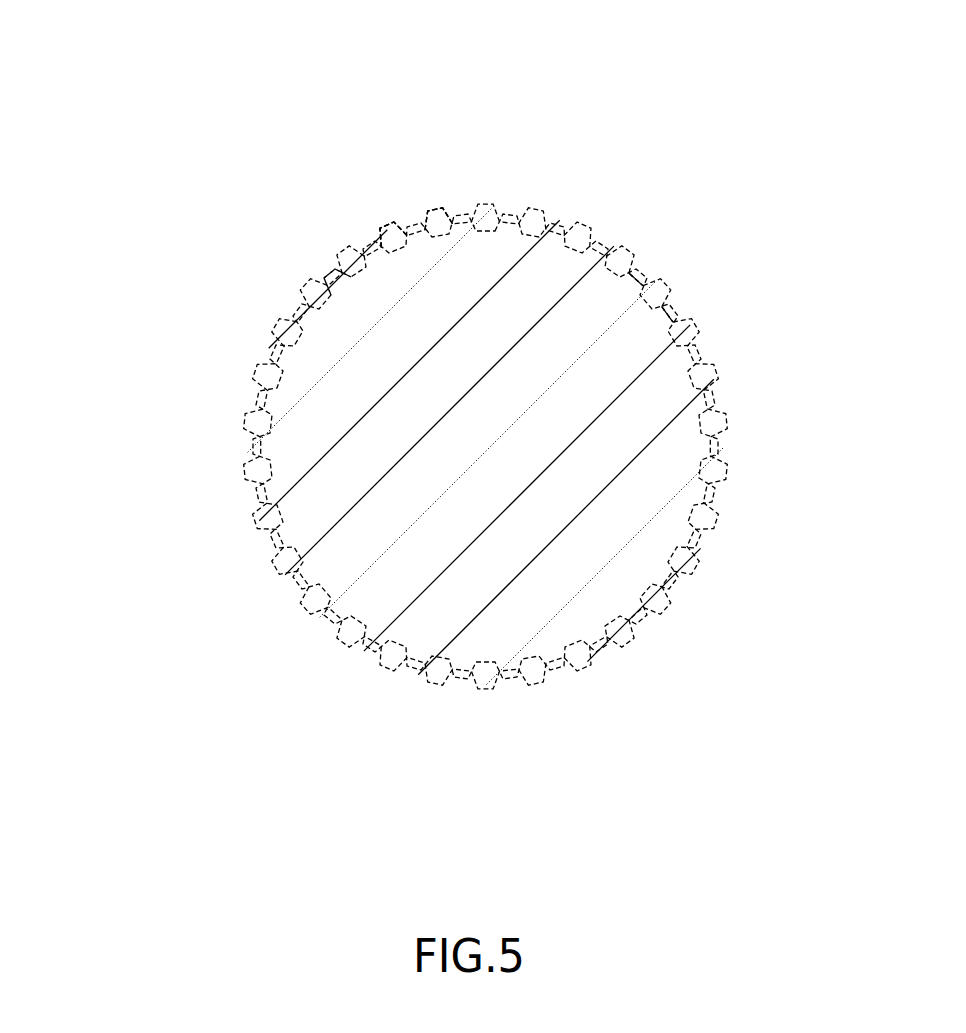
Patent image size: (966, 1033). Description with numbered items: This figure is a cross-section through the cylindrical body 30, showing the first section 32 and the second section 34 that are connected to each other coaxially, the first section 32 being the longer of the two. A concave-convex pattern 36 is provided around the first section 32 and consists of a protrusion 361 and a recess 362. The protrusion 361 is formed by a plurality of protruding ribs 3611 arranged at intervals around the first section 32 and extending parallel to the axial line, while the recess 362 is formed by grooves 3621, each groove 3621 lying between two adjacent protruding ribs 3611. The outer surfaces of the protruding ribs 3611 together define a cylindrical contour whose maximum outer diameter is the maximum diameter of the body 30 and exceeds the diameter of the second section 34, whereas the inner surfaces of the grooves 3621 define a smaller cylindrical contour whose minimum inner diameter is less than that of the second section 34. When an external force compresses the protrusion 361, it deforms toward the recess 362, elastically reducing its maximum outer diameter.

The body 30 is at (519, 376).
The first section 32 is at (600, 395).
The second section 34 is at (332, 274).
The concave-convex pattern 36 is at (519, 372).
The protrusion 361 is at (196, 58).
The protruding ribs 3611 is at (428, 208).
The recess 362 is at (858, 185).
The grooves 3621 is at (647, 272).